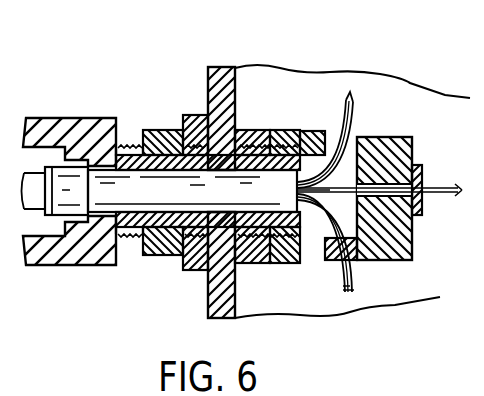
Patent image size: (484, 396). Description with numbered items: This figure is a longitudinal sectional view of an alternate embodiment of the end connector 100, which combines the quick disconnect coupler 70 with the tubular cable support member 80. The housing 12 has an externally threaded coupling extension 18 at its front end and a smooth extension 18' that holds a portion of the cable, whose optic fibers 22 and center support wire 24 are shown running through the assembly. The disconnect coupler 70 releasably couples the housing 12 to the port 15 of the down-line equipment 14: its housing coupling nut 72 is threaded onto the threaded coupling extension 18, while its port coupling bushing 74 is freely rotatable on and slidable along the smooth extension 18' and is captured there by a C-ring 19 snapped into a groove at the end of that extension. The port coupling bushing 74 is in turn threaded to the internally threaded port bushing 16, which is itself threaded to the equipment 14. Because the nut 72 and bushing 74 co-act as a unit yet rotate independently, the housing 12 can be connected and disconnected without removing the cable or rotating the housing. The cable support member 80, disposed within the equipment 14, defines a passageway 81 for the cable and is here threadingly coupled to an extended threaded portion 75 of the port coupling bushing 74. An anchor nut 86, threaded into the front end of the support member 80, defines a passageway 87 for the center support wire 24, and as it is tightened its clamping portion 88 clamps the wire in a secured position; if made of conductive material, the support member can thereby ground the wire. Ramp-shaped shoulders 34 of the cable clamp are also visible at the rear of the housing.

The end connector 100 is at (189, 56).
The housing 12 is at (58, 118).
The down-line equipment 14 is at (250, 75).
The port 15 is at (257, 108).
The port bushing 16 is at (195, 120).
The threaded coupling extension 18 is at (124, 121).
The smooth extension 18' is at (324, 265).
The C-ring 19 is at (284, 133).
The optic fibers 22 is at (340, 88).
The center support wire 24 is at (300, 132).
The ramp-shaped shoulders 34 is at (40, 266).
The quick disconnect coupler 70 is at (164, 108).
The housing coupling nut 72 is at (140, 265).
The port coupling bushing 74 is at (173, 262).
The extended threaded portion 75 is at (285, 262).
The tubular cable support member 80 is at (336, 268).
The passageway 81 is at (365, 260).
The anchor nut 86 is at (419, 166).
The passageway 87 is at (432, 187).
The clamping portion 88 is at (382, 136).